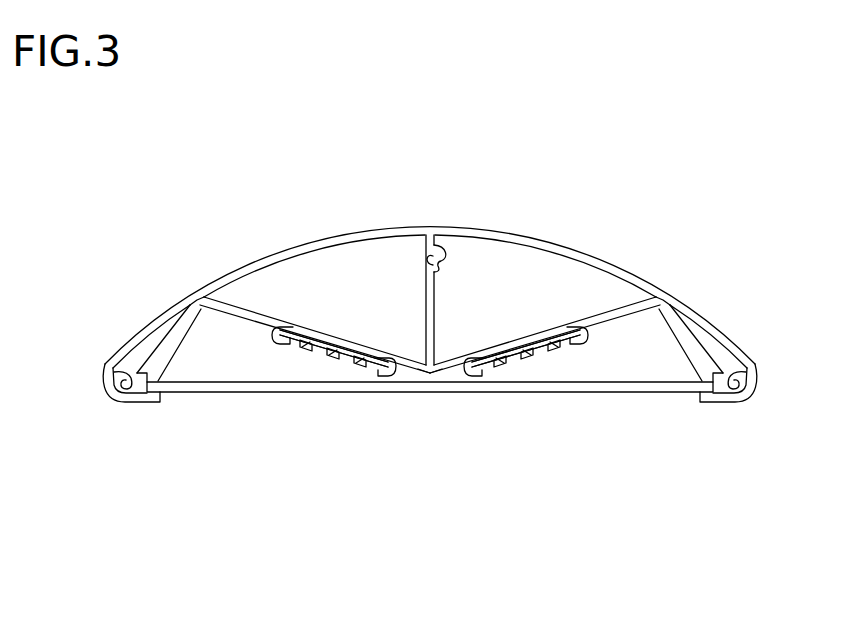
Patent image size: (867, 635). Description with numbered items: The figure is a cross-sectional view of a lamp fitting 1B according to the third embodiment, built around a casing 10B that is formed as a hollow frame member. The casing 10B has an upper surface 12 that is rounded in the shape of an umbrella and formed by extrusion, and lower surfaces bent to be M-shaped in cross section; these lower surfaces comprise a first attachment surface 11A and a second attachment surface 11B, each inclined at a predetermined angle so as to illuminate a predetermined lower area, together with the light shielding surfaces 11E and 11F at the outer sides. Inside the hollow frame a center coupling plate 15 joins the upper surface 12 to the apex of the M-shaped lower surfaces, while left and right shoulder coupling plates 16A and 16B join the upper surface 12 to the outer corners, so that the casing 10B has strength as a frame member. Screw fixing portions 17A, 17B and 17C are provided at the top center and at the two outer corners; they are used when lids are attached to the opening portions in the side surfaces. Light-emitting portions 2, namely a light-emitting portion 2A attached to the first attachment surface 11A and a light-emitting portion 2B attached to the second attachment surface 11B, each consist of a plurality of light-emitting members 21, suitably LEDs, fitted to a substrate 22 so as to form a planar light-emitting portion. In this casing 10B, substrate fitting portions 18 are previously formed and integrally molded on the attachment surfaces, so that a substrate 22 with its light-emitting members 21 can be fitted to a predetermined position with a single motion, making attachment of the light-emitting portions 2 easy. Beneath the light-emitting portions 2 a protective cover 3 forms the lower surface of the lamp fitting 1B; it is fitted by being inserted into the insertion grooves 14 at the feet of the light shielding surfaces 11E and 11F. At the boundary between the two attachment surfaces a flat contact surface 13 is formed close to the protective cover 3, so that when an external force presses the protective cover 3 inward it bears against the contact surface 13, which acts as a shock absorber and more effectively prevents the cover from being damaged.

The lamp fitting 1B is at (558, 177).
The casing 10B is at (574, 236).
The upper surface 12 is at (289, 248).
The center coupling plate 15 is at (422, 298).
The screw fixing portion 17A is at (442, 246).
The left shoulder coupling plate 16A is at (203, 291).
The right shoulder coupling plate 16B is at (655, 293).
The screw fixing portion 17B is at (128, 381).
The screw fixing portion 17C is at (732, 381).
The substrate fitting portion 18 is at (387, 360).
The insertion groove 14 is at (167, 400).
The light shielding surface 11E is at (182, 343).
The light shielding surface 11F is at (678, 343).
The first attachment surface 11A is at (258, 325).
The second attachment surface 11B is at (600, 322).
The contact surface 13 is at (428, 378).
The protective cover 3 is at (486, 393).
The light-emitting portion 2 is at (568, 578).
The light-emitting portion 2A is at (363, 523).
The light-emitting portion 2B is at (593, 523).
The light-emitting member 21 is at (303, 342).
The substrate 22 is at (320, 354).